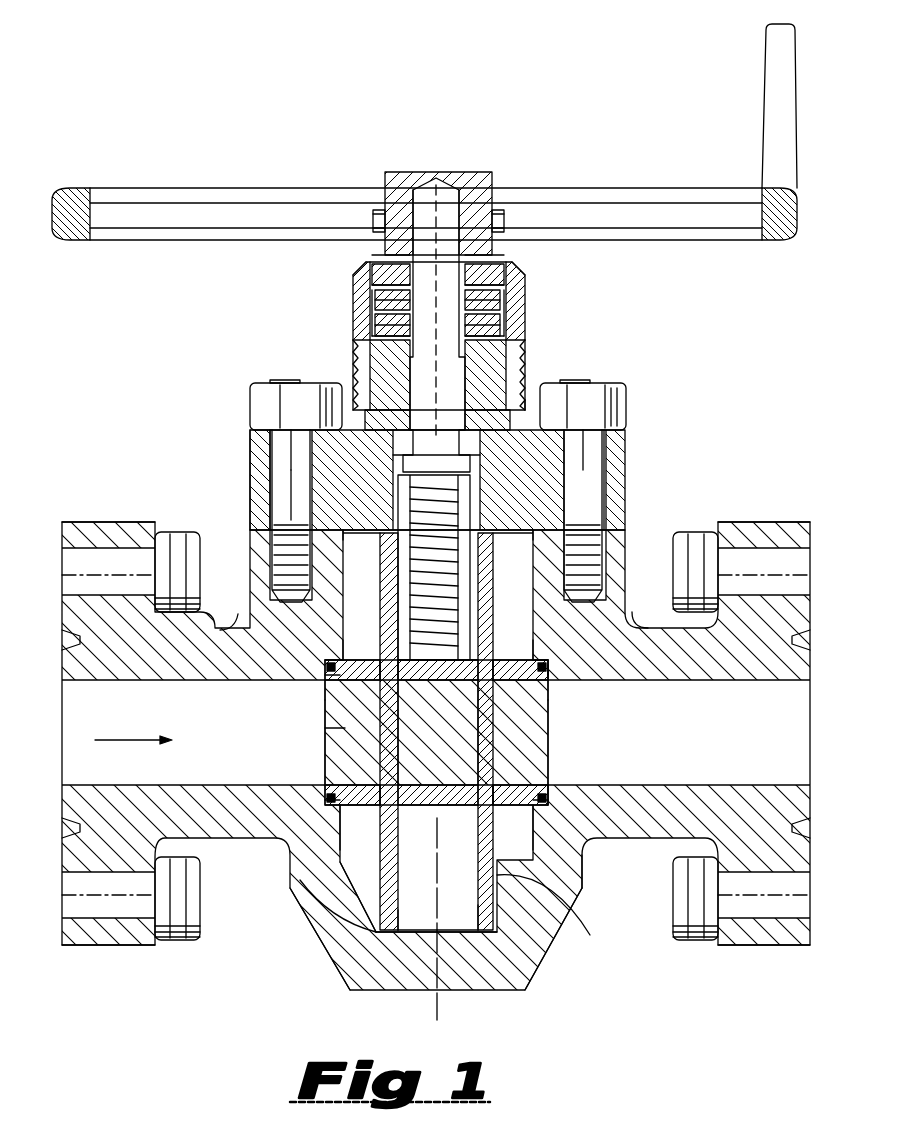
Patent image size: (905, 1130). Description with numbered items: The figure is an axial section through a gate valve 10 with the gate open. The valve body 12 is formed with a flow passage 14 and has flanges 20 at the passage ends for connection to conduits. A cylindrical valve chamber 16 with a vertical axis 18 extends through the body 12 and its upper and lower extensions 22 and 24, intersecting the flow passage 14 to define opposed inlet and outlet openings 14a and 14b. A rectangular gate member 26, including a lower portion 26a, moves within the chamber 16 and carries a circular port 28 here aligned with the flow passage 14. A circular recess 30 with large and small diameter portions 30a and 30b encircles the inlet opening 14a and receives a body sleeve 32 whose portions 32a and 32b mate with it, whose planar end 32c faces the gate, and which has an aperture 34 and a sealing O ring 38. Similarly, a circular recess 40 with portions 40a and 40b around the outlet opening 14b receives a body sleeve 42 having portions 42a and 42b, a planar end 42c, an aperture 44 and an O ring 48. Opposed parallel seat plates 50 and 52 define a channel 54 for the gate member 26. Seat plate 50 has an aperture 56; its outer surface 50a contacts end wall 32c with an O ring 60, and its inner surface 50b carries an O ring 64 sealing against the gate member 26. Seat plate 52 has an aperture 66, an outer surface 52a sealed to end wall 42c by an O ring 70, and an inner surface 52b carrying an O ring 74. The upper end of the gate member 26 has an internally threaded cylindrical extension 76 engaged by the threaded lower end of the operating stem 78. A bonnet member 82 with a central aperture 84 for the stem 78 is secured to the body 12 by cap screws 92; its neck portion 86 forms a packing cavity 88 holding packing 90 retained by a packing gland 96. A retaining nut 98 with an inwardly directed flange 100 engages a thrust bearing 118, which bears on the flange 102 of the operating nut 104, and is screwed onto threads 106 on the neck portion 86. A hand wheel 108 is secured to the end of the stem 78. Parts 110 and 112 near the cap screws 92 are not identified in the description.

The gate valve 10 is at (704, 470).
The valve body 12 is at (238, 616).
The flow passage 14 is at (800, 722).
The inlet opening 14a is at (325, 690).
The outlet opening 14b is at (560, 705).
The cylindrical valve chamber 16 is at (610, 525).
The vertical axis 18 is at (430, 995).
The flange bolts and nuts 20 is at (108, 522).
The upper extension 22 is at (640, 580).
The lower extension 24 is at (570, 915).
The gate member 26 is at (380, 880).
The gate stem lower portion 26a is at (437, 818).
The circular port 28 is at (446, 732).
The circular recess 30 is at (343, 660).
The large diameter portion 30a is at (343, 645).
The small diameter portion 30b is at (330, 666).
The body sleeve 32 is at (340, 790).
The large diameter portion 32a is at (345, 866).
The small diameter portion 32b is at (335, 802).
The innermost planar end 32c is at (380, 787).
The aperture 34 is at (345, 730).
The O ring 38 is at (327, 680).
The circular recess 40 is at (540, 660).
The large diameter portion 40a is at (533, 645).
The small diameter portion 40b is at (550, 668).
The body sleeve 42 is at (548, 790).
The large diameter portion 42a is at (533, 810).
The small diameter portion 42b is at (550, 802).
The innermost planar end 42c is at (495, 787).
The aperture 44 is at (560, 735).
The O ring 48 is at (550, 690).
The seat plate 50 is at (385, 930).
The outer surface 50a is at (380, 912).
The inner surface 50b is at (396, 942).
The seat plate 52 is at (495, 935).
The outer surface 52a is at (520, 905).
The inner surface 52b is at (480, 935).
The channel 54 is at (400, 960).
The aperture 56 is at (325, 762).
The O ring 60 is at (380, 680).
The O ring 64 is at (400, 680).
The aperture 66 is at (535, 752).
The O ring 70 is at (495, 680).
The O ring 74 is at (470, 680).
The cylindrical extension 76 is at (470, 520).
The operating stem 78 is at (372, 292).
The bonnet member 82 is at (340, 398).
The central aperture 84 is at (262, 444).
The neck portion 86 is at (365, 345).
The packing cavity 88 is at (356, 380).
The packing 90 is at (528, 366).
The cap screws 92 is at (600, 400).
The packing gland 96 is at (545, 338).
The retaining nut 98 is at (560, 262).
The inwardly directed flange 100 is at (500, 262).
The flange 102 is at (525, 300).
The operating nut 104 is at (372, 270).
The threads 106 is at (562, 386).
The hand wheel 108 is at (650, 188).
The bonnet bolt shank 110 is at (270, 478).
The bolt washer 112 is at (612, 426).
The thrust bearing 118 is at (522, 286).